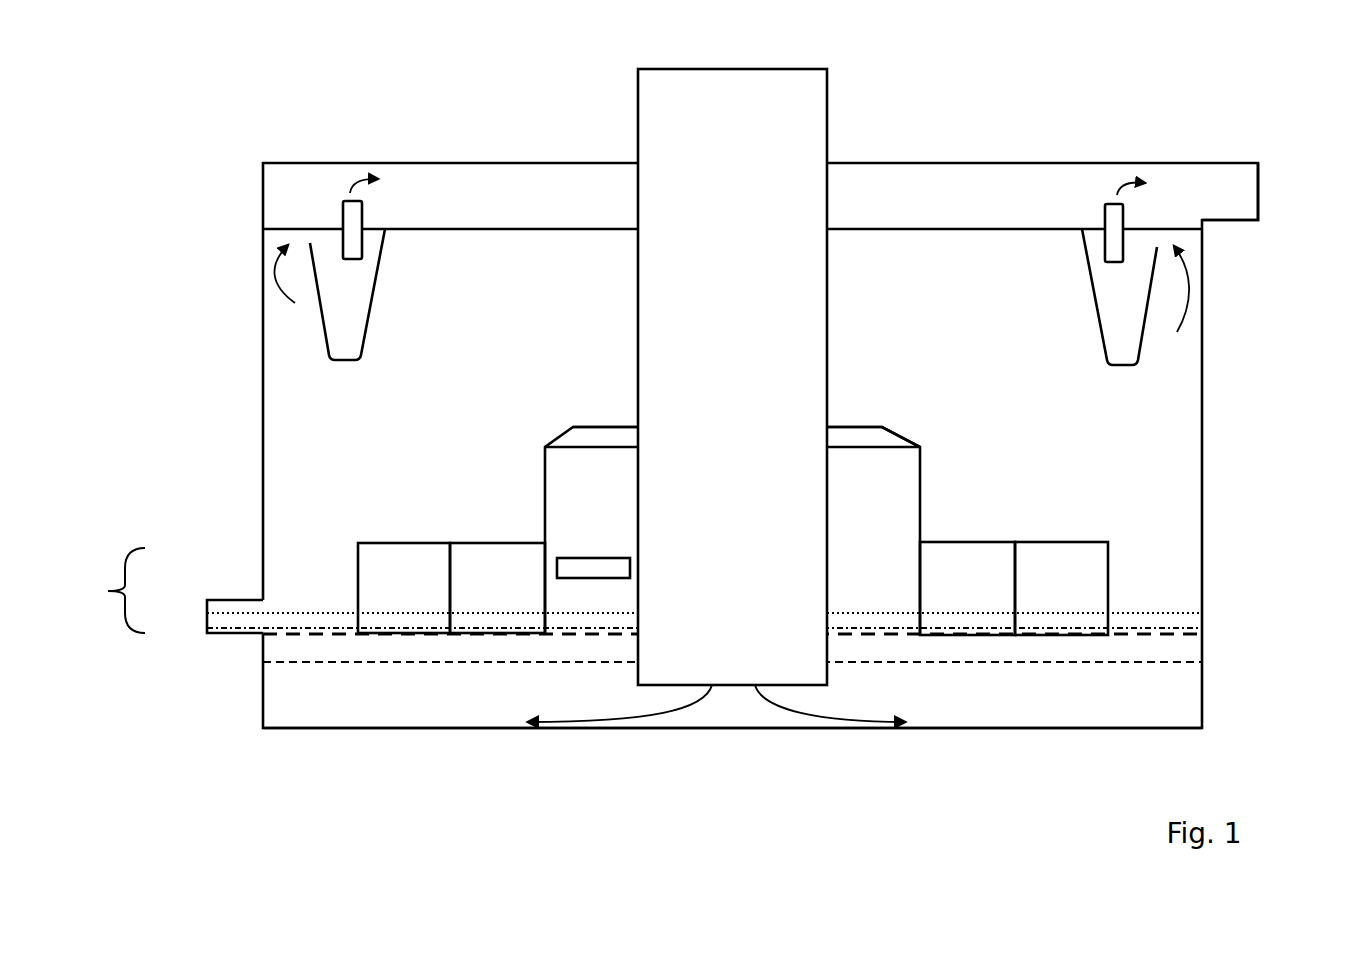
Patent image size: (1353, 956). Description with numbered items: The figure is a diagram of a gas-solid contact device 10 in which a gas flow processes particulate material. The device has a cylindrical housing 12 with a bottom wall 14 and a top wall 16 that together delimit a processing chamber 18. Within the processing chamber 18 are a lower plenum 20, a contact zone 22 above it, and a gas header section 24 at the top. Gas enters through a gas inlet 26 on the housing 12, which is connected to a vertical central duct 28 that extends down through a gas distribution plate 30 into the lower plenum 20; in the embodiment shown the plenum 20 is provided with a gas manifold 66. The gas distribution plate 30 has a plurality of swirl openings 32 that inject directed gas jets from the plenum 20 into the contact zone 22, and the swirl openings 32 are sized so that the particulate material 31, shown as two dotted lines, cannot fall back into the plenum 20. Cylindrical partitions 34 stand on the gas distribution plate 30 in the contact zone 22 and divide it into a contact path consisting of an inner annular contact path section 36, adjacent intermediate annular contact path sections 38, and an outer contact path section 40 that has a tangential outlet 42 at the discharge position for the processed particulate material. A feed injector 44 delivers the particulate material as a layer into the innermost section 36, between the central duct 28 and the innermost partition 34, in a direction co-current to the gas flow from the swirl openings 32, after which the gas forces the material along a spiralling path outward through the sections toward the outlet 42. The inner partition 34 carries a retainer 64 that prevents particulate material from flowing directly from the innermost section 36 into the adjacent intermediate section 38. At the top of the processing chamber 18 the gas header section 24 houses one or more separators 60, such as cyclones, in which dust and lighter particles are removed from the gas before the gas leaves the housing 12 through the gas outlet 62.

The gas-solid contact device 10 is at (345, 112).
The cylindrical housing 12 is at (263, 403).
The bottom wall 14 is at (377, 728).
The top wall 16 is at (465, 162).
The processing chamber 18 is at (450, 365).
The lower plenum 20 is at (450, 693).
The contact zone 22 is at (101, 590).
The gas header section 24 is at (450, 189).
The gas inlet 26 is at (768, 68).
The vertical central duct 28 is at (830, 270).
The gas distribution plate 30 is at (1167, 637).
The particulate material 31 is at (1127, 628).
The swirl openings 32 is at (860, 637).
The cylindrical partitions 34 is at (922, 478).
The inner annular contact path section 36 is at (593, 596).
The intermediate annular contact path sections 38 is at (451, 588).
The outer contact path section 40 is at (310, 588).
The tangential outlet 42 is at (207, 627).
The feed injector 44 is at (612, 555).
The separators 60 is at (385, 268).
The gas outlet 62 is at (1258, 193).
The retainer 64 is at (897, 432).
The gas manifold 66 is at (873, 662).